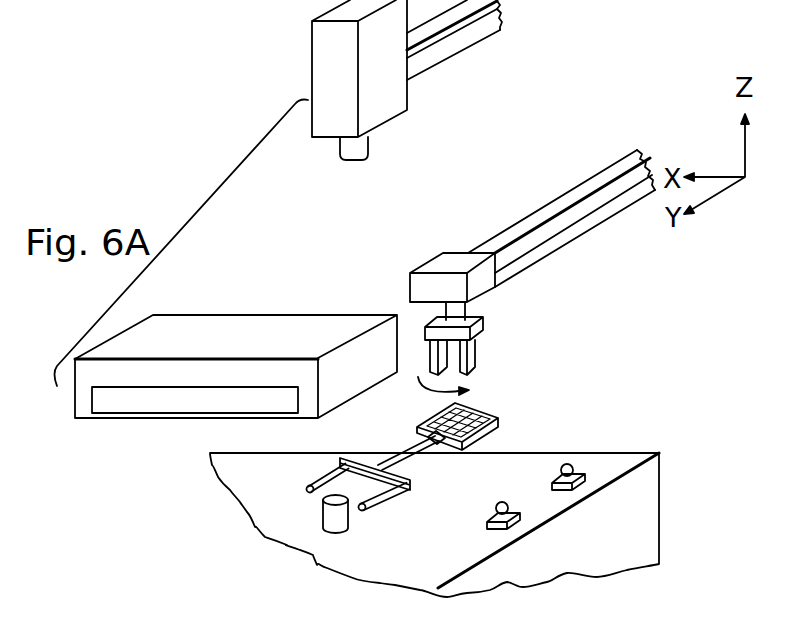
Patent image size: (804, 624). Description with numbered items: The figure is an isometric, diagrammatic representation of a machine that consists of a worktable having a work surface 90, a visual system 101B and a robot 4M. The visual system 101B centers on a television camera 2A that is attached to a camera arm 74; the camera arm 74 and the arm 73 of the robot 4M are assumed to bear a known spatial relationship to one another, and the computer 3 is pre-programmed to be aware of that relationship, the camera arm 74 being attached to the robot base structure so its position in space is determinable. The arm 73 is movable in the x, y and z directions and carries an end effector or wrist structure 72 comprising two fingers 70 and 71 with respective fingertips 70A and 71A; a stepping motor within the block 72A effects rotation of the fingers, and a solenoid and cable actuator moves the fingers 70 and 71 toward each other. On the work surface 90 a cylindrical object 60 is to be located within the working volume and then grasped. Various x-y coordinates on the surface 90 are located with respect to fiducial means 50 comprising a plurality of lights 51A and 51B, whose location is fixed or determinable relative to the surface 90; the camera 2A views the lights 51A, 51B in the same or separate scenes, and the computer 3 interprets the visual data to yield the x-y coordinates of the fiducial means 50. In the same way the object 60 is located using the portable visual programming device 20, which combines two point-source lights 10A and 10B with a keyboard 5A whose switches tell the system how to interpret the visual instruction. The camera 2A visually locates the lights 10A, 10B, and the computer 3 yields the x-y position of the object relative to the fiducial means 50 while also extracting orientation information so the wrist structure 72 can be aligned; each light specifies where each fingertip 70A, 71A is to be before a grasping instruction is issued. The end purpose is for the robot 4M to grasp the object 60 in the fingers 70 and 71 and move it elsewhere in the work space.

The television camera 2A is at (312, 60).
The camera arm 74 is at (453, 43).
The visual system 101B is at (263, 230).
The computer 3 is at (232, 337).
The arm 73 is at (592, 183).
The robot 4M is at (520, 221).
The finger 70 is at (471, 315).
The block 72A is at (485, 277).
The wrist structure 72 is at (476, 304).
The finger 71 is at (471, 356).
The fingertip 71A is at (469, 375).
The fingertip 70A is at (422, 400).
The keyboard 5A is at (497, 416).
The visual programming device 20 is at (318, 516).
The source of light 10A is at (306, 490).
The source of light 10B is at (364, 507).
The cylindrical object 60 is at (327, 501).
The fiducial means 50 is at (608, 478).
The light 51A is at (575, 470).
The light 51B is at (504, 508).
The work surface 90 is at (461, 556).